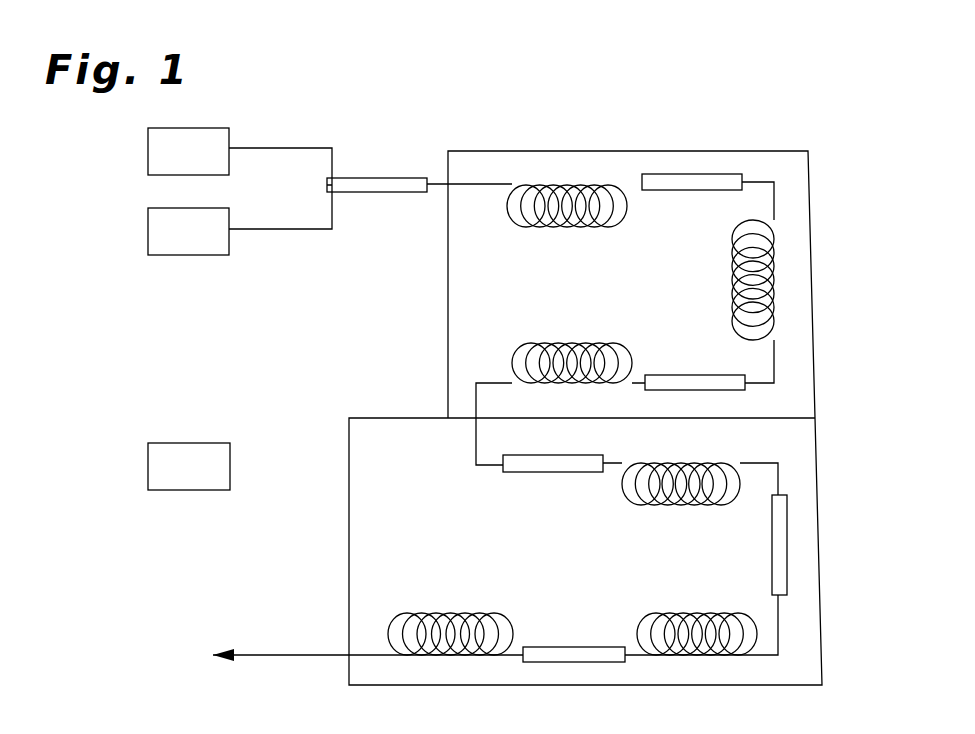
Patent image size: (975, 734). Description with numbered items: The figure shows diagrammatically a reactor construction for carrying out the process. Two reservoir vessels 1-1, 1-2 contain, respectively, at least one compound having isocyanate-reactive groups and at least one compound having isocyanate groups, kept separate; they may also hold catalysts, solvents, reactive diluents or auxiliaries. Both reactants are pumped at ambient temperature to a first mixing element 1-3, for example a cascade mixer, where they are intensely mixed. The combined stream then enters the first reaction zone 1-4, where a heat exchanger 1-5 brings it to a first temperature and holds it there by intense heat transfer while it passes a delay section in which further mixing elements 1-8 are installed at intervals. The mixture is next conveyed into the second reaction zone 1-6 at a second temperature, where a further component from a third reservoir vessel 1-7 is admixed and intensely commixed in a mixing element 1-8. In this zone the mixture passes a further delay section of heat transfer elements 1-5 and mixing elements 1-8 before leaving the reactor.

The reservoir vessel 1-1 is at (147, 148).
The reservoir vessel 1-2 is at (147, 230).
The first mixing element 1-3 is at (378, 173).
The first reaction zone 1-4 is at (447, 273).
The heat exchanger 1-5 is at (577, 228).
The second reaction zone 1-6 is at (347, 540).
The reservoir vessel 1-7 is at (147, 465).
The mixing element 1-8 is at (694, 192).